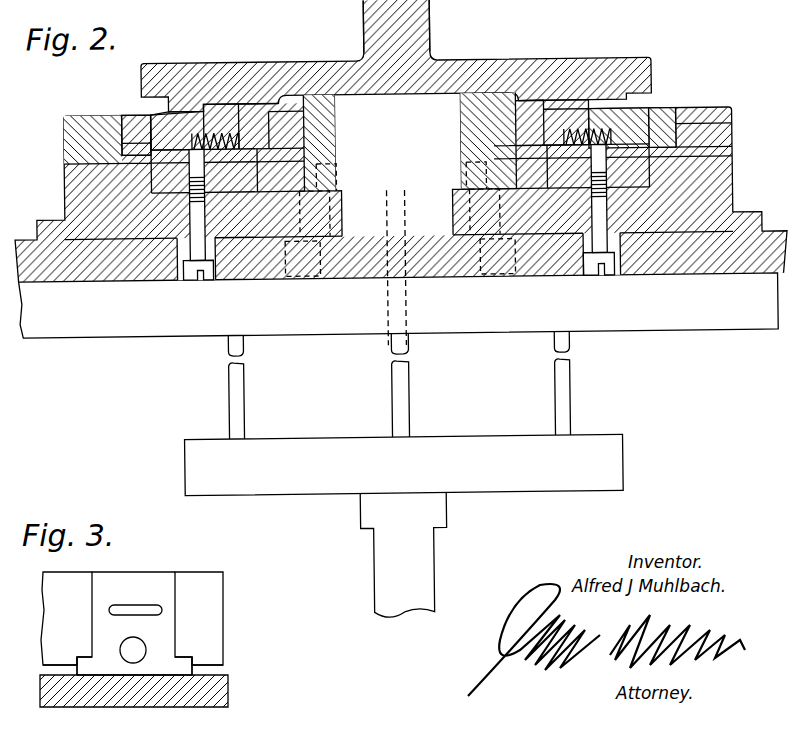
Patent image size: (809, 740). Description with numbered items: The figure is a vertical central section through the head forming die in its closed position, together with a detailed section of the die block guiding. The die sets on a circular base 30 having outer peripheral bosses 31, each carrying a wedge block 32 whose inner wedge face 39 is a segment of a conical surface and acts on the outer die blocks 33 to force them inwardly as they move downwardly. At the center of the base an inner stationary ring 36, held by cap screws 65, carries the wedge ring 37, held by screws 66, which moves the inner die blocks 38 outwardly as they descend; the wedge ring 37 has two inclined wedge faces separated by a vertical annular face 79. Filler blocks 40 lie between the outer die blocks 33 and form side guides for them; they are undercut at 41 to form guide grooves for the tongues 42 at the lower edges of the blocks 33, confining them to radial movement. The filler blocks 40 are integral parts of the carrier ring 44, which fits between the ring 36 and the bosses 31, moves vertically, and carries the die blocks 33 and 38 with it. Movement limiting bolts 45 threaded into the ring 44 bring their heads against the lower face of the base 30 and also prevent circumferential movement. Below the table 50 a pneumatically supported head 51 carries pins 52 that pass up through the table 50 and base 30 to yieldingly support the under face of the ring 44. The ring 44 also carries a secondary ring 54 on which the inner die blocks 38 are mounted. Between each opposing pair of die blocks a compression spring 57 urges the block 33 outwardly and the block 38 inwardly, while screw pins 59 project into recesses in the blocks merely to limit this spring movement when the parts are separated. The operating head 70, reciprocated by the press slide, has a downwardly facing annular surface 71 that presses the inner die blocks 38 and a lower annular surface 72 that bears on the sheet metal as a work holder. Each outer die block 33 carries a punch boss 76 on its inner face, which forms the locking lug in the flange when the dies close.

In FIG. 2, the circular base 30 is at (737, 186).
In FIG. 2, the outer peripheral bosses 31 is at (85, 112).
In FIG. 2, the wedge block 32 is at (137, 112).
In FIG. 2, the outer die block 33 is at (152, 112).
In FIG. 3, the outer die block 33 is at (143, 578).
In FIG. 2, the inner stationary ring 36 is at (328, 126).
In FIG. 2, the inner die block operating wedge ring 37 is at (500, 112).
In FIG. 2, the inner die block 38 is at (238, 100).
In FIG. 2, the inner wedge face 39 is at (123, 137).
In FIG. 3, the filler block 40 is at (132, 618).
In FIG. 3, the undercut 41 is at (75, 666).
In FIG. 3, the tongue 42 is at (82, 657).
In FIG. 2, the carrier ring 44 is at (300, 237).
In FIG. 3, the carrier ring 44 is at (207, 697).
In FIG. 2, the movement limiting bolt 45 is at (197, 243).
In FIG. 2, the table 50 is at (710, 278).
In FIG. 2, the pneumatically supported head 51 is at (405, 526).
In FIG. 2, the pin 52 is at (242, 403).
In FIG. 2, the secondary ring 54 is at (258, 192).
In FIG. 2, the compression spring 57 is at (212, 131).
In FIG. 2, the screw pin 59 is at (160, 163).
In FIG. 2, the cap screws 65 is at (337, 176).
In FIG. 2, the screws or bolts 66 is at (290, 130).
In FIG. 2, the operating head 70 is at (450, 55).
In FIG. 2, the downwardly facing annular surface 71 is at (265, 112).
In FIG. 2, the lower annular surface 72 is at (603, 106).
In FIG. 3, the punch boss 76 is at (145, 610).
In FIG. 2, the vertical annular face 79 is at (542, 100).